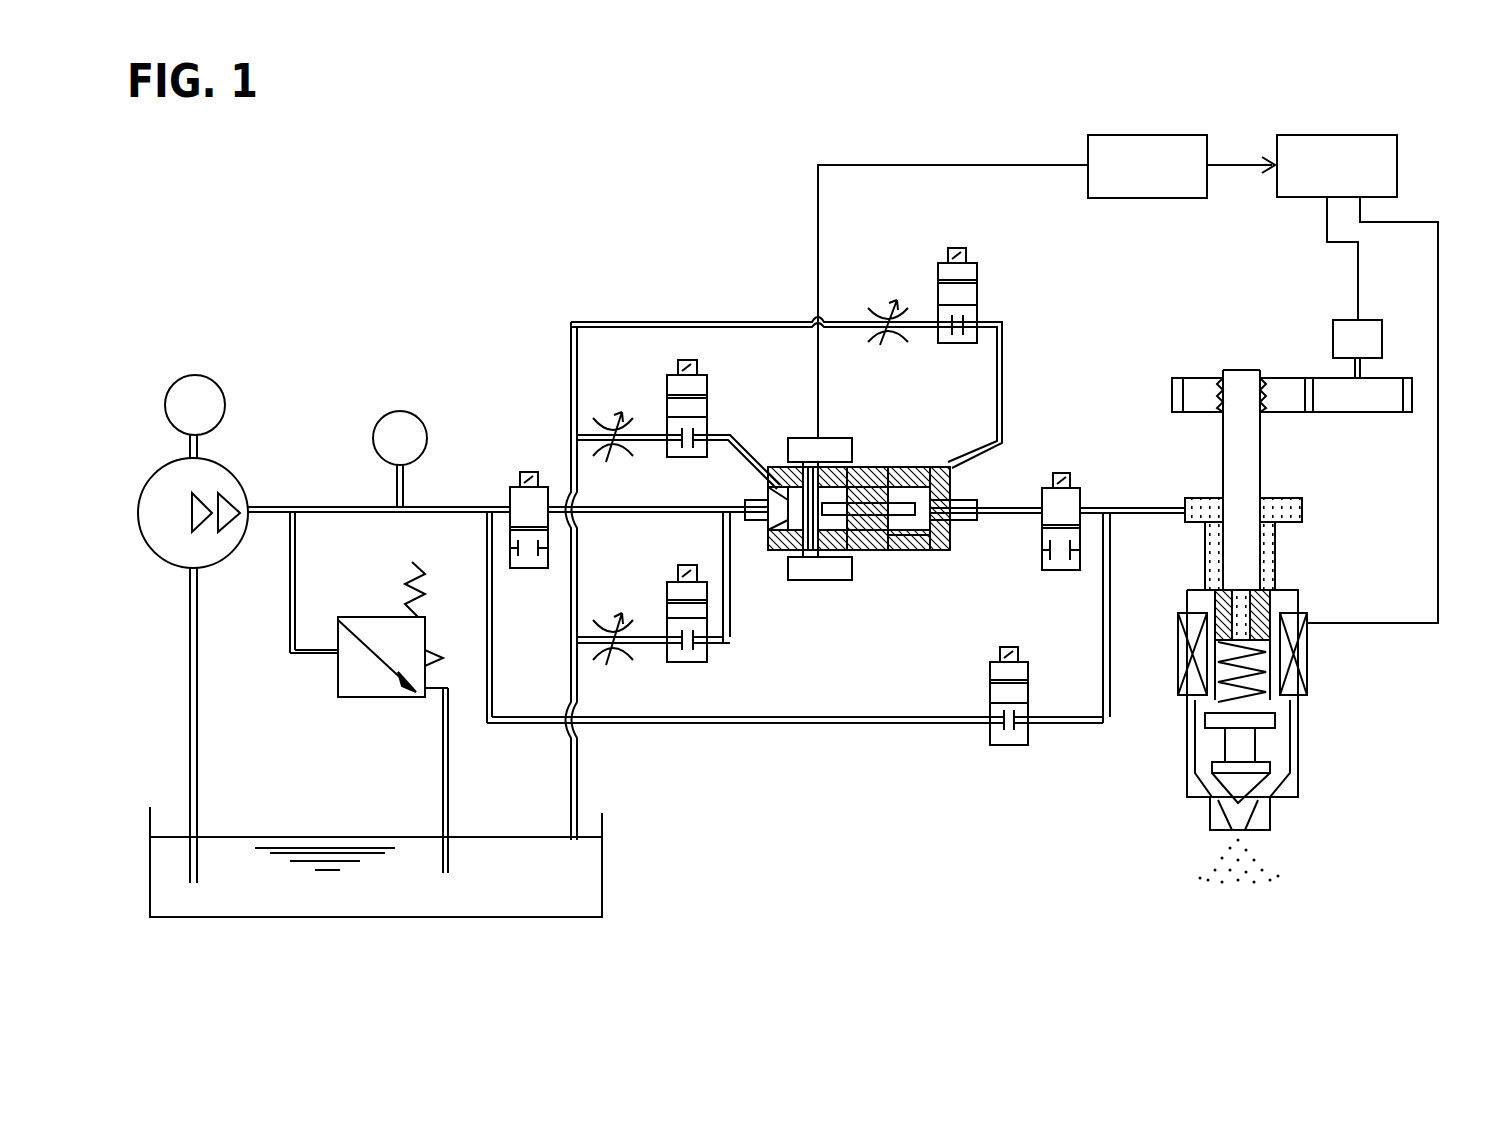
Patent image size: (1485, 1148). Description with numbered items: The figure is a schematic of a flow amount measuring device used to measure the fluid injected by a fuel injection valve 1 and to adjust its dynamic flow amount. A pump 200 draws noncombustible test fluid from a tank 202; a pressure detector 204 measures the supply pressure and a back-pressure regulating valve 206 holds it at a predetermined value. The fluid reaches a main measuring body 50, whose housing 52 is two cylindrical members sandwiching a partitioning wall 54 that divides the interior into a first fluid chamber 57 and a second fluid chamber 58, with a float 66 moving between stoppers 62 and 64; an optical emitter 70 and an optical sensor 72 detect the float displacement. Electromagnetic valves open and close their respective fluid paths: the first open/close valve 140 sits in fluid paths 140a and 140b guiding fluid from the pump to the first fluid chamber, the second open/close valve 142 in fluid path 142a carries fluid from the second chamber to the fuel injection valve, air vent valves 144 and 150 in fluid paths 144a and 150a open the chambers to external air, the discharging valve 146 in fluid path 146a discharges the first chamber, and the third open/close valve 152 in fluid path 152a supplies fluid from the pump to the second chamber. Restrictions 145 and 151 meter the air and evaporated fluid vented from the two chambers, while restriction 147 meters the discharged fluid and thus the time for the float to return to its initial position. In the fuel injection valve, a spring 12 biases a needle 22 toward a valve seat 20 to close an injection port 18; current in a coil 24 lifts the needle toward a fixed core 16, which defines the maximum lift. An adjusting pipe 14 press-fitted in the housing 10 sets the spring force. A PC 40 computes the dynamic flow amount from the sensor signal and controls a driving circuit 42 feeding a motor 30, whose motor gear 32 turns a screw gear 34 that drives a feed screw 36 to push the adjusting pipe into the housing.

The fuel injection valve 1 is at (1320, 497).
The housing 10 is at (1195, 594).
The spring 12 is at (1270, 680).
The adjusting pipe 14 is at (1298, 603).
The fixed core 16 is at (1272, 722).
The injection port 18 is at (1255, 828).
The valve seat 20 is at (1265, 785).
The needle 22 is at (1250, 748).
The coil 24 is at (1308, 650).
The motor 30 is at (1333, 335).
The motor gear 32 is at (1388, 385).
The screw gear 34 is at (1198, 385).
The feed screw 36 is at (1244, 375).
The personal computer 40 is at (1120, 135).
The driving circuit 42 is at (1295, 135).
The main measuring body 50 is at (915, 552).
The housing 52 is at (946, 548).
The partitioning wall 54 is at (868, 552).
The first fluid chamber 57 is at (792, 552).
The second fluid chamber 58 is at (921, 488).
The stopper 62 is at (770, 527).
The stopper 64 is at (956, 492).
The float 66 is at (898, 470).
The optical emitter 70 is at (833, 581).
The optical sensor 72 is at (843, 437).
The electromagnetic valve 140 is at (512, 486).
The fluid path 140a is at (630, 516).
The fluid path 140b is at (450, 513).
The electromagnetic valve 142 is at (1082, 500).
The fluid path 142a is at (1028, 506).
The electromagnetic valve 144 is at (708, 386).
The fluid path 144a is at (770, 422).
The restriction 145 is at (600, 428).
The electromagnetic valve 146 is at (708, 658).
The fluid path 146a is at (731, 622).
The restriction 147 is at (600, 632).
The electromagnetic valve 150 is at (978, 275).
The fluid path 150a is at (664, 322).
The restriction 151 is at (882, 312).
The electromagnetic valve 152 is at (1000, 748).
The fluid path 152a is at (762, 725).
The pump 200 is at (232, 470).
The tank 202 is at (602, 878).
The pressure detector 204 is at (402, 411).
The back-pressure regulating valve 206 is at (378, 698).